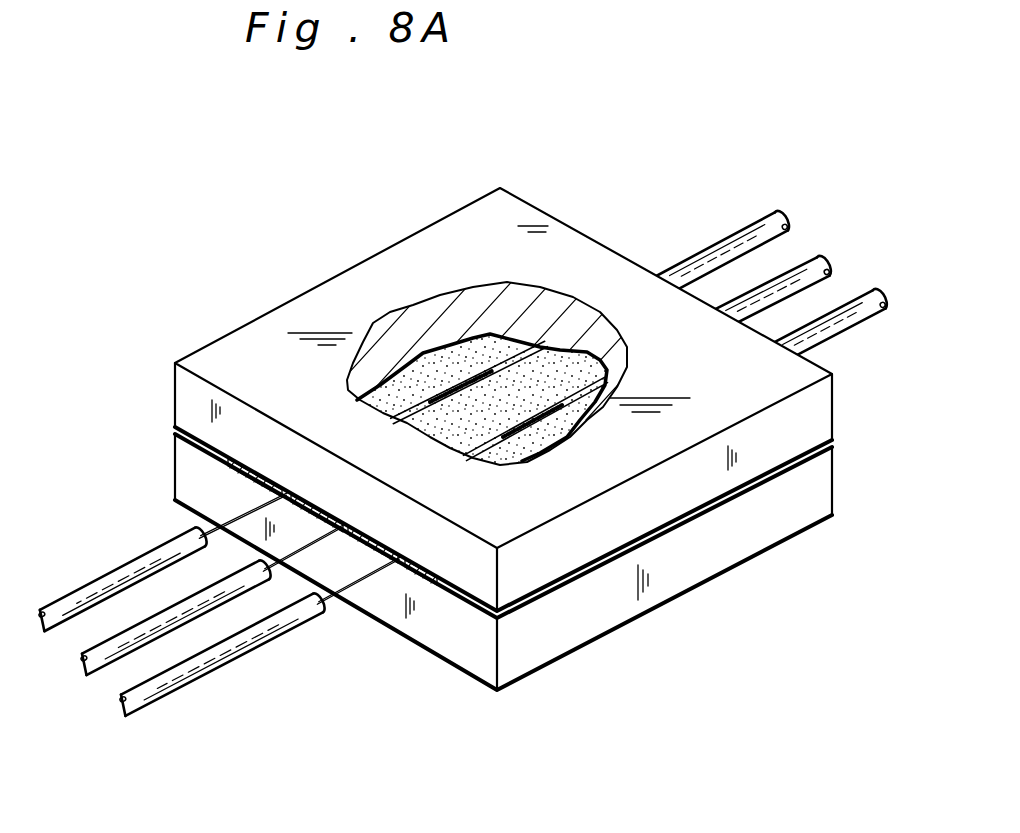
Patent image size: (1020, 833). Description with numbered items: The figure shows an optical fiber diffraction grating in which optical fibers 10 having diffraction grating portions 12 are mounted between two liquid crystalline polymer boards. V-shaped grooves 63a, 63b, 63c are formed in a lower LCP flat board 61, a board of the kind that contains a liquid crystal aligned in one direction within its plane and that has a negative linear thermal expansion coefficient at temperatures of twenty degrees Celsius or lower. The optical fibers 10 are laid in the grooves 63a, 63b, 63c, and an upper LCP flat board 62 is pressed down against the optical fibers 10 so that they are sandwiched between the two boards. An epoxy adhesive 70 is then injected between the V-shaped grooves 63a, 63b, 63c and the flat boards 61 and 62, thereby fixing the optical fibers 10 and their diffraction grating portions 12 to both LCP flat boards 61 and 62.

The optical fiber 10 is at (360, 584).
The diffraction grating portion 12 is at (467, 380).
The LCP flat board 61 is at (450, 634).
The upper LCP flat board 62 is at (810, 420).
The V-shaped groove 63a is at (262, 488).
The V-shaped groove 63b is at (333, 523).
The V-shaped groove 63c is at (392, 552).
The epoxy adhesive 70 is at (233, 465).